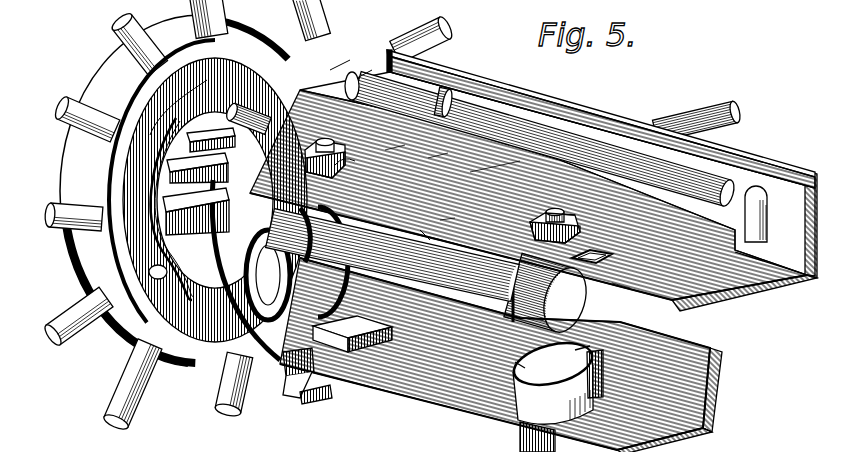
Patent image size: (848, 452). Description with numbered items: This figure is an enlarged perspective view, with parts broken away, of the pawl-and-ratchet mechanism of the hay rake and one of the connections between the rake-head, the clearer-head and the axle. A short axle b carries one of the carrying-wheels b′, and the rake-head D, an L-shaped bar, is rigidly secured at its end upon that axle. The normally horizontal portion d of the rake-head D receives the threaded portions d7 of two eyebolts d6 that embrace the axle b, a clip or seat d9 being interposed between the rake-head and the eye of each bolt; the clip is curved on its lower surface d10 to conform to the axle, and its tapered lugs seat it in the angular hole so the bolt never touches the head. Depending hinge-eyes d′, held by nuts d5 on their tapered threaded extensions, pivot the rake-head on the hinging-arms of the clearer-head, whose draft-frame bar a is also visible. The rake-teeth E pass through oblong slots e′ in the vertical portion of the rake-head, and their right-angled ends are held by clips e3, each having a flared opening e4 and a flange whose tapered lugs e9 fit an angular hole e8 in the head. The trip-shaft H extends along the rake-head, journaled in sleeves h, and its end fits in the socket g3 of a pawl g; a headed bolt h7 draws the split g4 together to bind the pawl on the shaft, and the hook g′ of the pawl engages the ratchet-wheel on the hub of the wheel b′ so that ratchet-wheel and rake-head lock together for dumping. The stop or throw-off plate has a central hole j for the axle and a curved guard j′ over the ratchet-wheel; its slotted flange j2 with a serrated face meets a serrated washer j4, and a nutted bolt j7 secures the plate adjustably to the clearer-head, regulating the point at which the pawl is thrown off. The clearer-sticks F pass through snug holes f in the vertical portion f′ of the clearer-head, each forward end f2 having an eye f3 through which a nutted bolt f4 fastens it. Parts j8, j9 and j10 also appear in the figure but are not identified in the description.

The short axle b is at (388, 278).
The carrying-wheel b′ is at (248, 216).
The draft-frame bar a is at (162, 211).
The central hole j is at (228, 316).
The bracket j8 is at (268, 259).
The bracket opening j9 is at (267, 260).
The curved guard j′ is at (215, 316).
The hook g′ is at (210, 110).
The pawl g is at (178, 100).
The rake-head D is at (767, 165).
The oblong slot e′ is at (763, 213).
The trip-shaft H is at (513, 110).
The rake-tooth E is at (680, 126).
The sleeve h is at (437, 87).
The headed bolt h7 is at (300, 42).
The split g4 is at (323, 67).
The socket g3 is at (357, 77).
The threaded portion d7 is at (363, 113).
The tapered lug e9 is at (345, 162).
The curved lower surface d10 is at (395, 158).
The tooth clip e3 is at (438, 165).
The eyebolt d6 is at (320, 224).
The nutted bolt j7 is at (415, 296).
The clamp arm j10 is at (470, 330).
The horizontal portion of rake-head d is at (530, 220).
The hinge-eye d′ is at (567, 204).
The nut d5 is at (581, 222).
The clip opening e4 is at (440, 219).
The angular hole e8 is at (597, 254).
The clip or seat d9 is at (629, 277).
The clearer-stick F is at (608, 383).
The vertical portion of clearer-head f′ is at (720, 405).
The slotted flange j2 is at (310, 369).
The serrated washer j4 is at (323, 373).
The eye f3 is at (553, 394).
The snug-fitting hole f is at (603, 358).
The forward end of clearer-stick f2 is at (576, 352).
The nutted bolt f4 is at (515, 366).